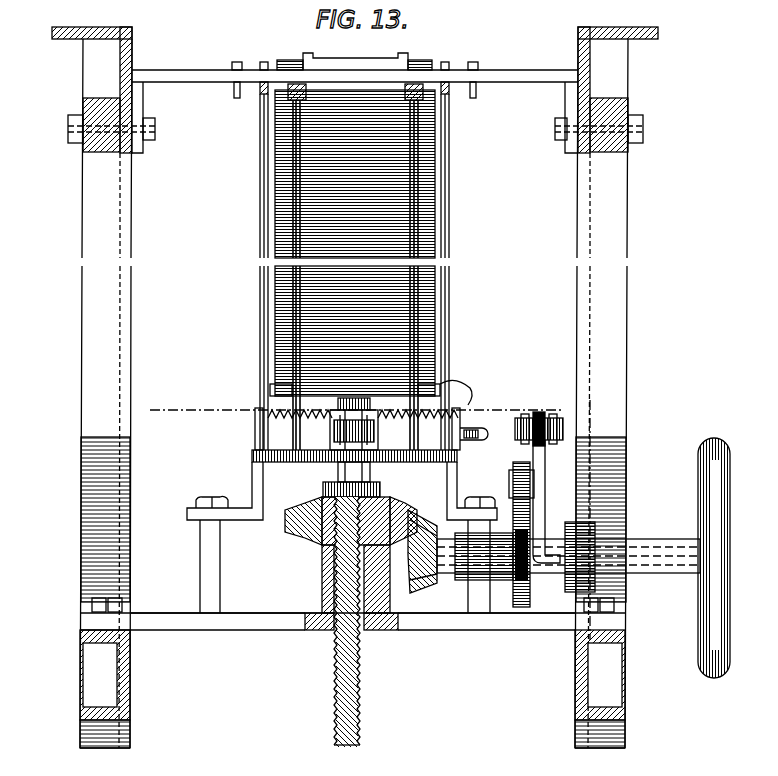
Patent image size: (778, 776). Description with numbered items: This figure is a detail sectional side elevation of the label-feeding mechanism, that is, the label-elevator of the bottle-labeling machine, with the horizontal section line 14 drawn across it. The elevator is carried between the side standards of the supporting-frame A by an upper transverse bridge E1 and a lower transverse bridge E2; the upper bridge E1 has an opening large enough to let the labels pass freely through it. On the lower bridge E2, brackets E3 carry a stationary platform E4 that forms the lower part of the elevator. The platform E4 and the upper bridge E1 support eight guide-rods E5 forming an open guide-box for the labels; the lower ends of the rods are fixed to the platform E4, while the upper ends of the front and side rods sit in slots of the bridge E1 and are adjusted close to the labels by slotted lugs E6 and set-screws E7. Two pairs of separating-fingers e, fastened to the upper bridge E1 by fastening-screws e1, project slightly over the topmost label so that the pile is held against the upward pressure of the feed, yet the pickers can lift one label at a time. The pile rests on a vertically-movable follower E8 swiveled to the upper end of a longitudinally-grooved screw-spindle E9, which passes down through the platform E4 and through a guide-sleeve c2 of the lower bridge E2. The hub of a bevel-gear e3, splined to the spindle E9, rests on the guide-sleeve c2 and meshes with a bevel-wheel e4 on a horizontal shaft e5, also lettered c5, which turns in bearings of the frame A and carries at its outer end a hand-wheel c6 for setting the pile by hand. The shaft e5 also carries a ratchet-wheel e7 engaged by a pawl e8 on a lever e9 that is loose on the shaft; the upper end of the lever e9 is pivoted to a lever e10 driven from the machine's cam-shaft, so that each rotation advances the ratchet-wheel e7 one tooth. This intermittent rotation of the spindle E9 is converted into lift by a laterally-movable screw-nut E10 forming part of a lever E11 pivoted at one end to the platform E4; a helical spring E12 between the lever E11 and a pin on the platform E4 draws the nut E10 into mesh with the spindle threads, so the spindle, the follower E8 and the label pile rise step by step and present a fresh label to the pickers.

The supporting-frame A is at (88, 68).
The upper transverse bridge E1 is at (355, 111).
The lower transverse bridge E2 is at (234, 622).
The brackets E3 is at (230, 507).
The stationary platform E4 is at (287, 462).
The guide-rods E5 is at (262, 237).
The slotted lugs E6 is at (236, 88).
The set-screws E7 is at (288, 94).
The follower E8 is at (281, 393).
The screw-spindle E9 is at (337, 702).
The screw-nut E10 is at (378, 470).
The lever E11 is at (462, 438).
The helical spring E12 is at (258, 418).
The separating-fingers e is at (356, 51).
The fastening-screws e1 is at (320, 70).
The bevel-gear e3 is at (400, 524).
The bevel-wheel e4 is at (418, 585).
The horizontal shaft e5 is at (304, 524).
The ratchet-wheel e7 is at (526, 595).
The pawl e8 is at (513, 497).
The lever e9 is at (537, 503).
The lever e10 is at (548, 420).
The guide-sleeve c2 is at (322, 585).
The horizontal shaft c5 is at (568, 557).
The hand-wheel c6 is at (700, 602).
The section line 14 14 is at (370, 516).